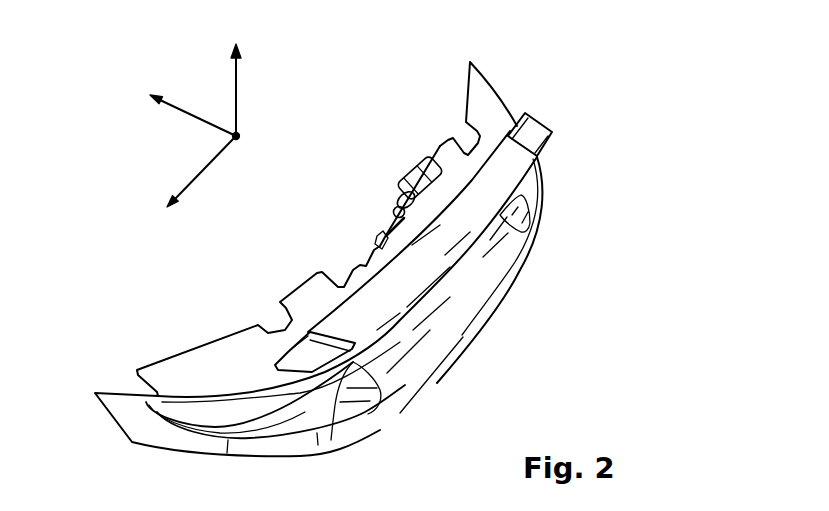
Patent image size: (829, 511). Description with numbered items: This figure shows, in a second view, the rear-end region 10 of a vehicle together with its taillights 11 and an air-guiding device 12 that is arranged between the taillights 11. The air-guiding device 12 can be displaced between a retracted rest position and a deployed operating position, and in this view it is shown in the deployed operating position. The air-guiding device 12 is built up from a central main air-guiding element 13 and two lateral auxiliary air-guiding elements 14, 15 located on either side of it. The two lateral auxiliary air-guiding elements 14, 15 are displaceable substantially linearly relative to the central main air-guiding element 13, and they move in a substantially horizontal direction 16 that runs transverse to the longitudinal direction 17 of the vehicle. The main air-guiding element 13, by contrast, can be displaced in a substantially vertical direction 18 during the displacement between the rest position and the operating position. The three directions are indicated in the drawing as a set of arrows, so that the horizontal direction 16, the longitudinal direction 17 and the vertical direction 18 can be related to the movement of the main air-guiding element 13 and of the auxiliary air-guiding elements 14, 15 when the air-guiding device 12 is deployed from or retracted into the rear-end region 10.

The rear-end region 10 is at (592, 208).
The taillight 11 is at (300, 405).
The air-guiding device 12 is at (560, 111).
The central main air-guiding element 13 is at (384, 282).
The lateral auxiliary air-guiding element 14 is at (533, 126).
The lateral auxiliary air-guiding element 15 is at (290, 362).
The horizontal direction 16 is at (190, 175).
The longitudinal direction 17 is at (190, 109).
The vertical direction 18 is at (242, 86).